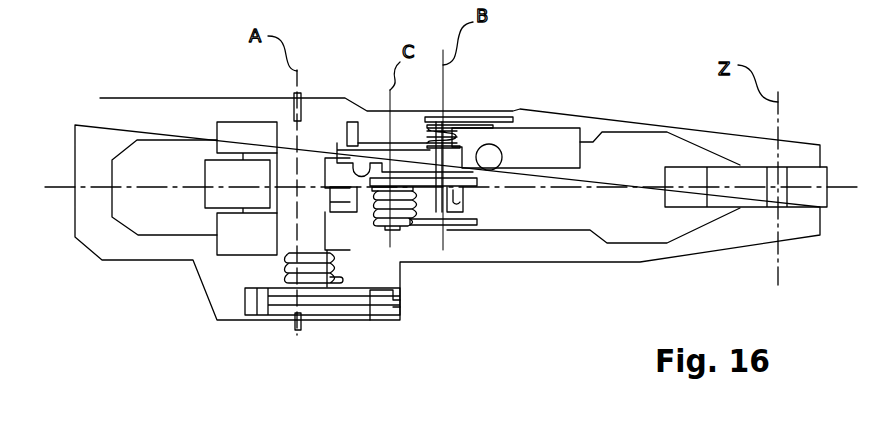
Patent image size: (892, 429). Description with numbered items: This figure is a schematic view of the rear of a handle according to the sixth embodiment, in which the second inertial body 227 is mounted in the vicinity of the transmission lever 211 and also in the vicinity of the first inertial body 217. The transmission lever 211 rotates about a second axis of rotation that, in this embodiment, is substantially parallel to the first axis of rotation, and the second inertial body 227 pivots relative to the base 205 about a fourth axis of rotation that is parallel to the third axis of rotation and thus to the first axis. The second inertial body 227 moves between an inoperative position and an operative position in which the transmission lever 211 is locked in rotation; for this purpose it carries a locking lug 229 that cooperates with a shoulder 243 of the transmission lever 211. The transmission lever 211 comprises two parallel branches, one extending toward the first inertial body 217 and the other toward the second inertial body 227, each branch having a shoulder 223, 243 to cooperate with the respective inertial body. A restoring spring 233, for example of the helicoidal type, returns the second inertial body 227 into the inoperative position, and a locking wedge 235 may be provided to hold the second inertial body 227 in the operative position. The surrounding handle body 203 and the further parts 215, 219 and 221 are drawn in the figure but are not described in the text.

The handle body 203 is at (635, 150).
The base 205 is at (687, 250).
The transmission lever 211 is at (287, 157).
The lower coil assembly 215 is at (287, 267).
The first inertial body 217 is at (550, 140).
The upper spring 219 is at (452, 132).
The stop block 221 is at (346, 143).
The shoulder 223 is at (366, 118).
The second inertial body 227 is at (412, 207).
The locking lug 229 is at (365, 197).
The restoring spring 233 is at (425, 215).
The locking wedge 235 is at (457, 199).
The shoulder 243 is at (350, 200).